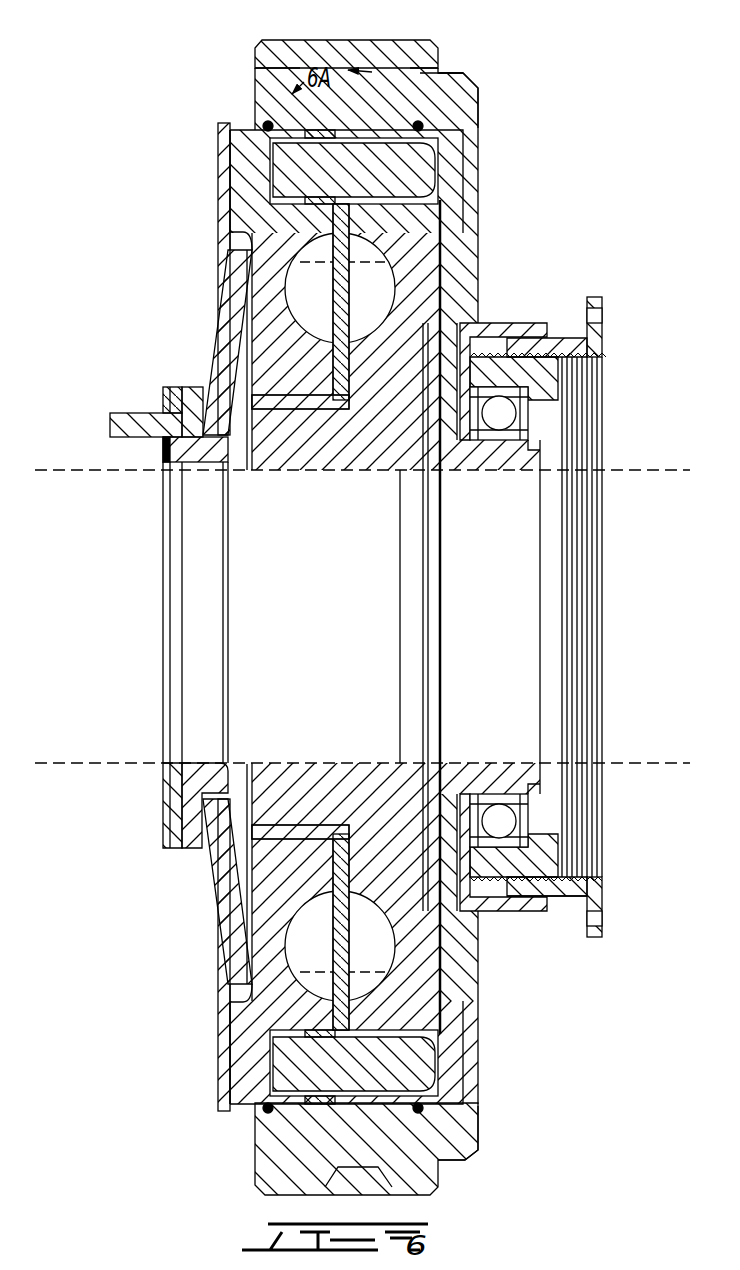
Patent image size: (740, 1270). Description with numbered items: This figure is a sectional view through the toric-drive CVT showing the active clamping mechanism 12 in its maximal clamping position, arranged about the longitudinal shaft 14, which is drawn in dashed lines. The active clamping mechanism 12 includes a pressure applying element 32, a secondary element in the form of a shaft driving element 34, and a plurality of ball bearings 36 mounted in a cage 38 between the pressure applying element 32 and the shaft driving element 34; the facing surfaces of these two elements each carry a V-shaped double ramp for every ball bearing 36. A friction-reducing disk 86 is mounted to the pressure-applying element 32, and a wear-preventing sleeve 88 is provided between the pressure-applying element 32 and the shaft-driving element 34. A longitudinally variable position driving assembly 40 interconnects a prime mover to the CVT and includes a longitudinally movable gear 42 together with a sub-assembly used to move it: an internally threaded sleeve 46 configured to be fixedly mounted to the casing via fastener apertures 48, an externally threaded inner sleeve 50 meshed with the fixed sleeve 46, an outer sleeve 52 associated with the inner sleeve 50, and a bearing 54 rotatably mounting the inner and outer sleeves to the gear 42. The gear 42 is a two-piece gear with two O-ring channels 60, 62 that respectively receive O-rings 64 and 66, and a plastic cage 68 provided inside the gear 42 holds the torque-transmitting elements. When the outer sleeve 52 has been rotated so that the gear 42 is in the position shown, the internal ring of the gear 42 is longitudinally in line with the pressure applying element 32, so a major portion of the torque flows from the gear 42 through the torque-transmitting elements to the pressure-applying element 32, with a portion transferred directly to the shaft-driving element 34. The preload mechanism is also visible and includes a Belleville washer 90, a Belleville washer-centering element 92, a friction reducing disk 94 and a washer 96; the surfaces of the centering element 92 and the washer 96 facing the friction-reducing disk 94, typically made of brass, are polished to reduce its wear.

The active clamping mechanism 12 is at (126, 104).
The longitudinal shaft 14 is at (70, 765).
The pressure applying element 32 is at (241, 138).
The shaft driving element 34 is at (415, 284).
The ball bearings 36 is at (372, 930).
The cage 38 is at (433, 1010).
The longitudinally variable position driving assembly 40 is at (496, 155).
The longitudinally movable gear 42 is at (468, 82).
The internally threaded sleeve 46 is at (567, 898).
The fastener apertures 48 is at (598, 916).
The externally threaded inner sleeve 50 is at (552, 846).
The outer sleeve 52 is at (512, 323).
The bearing 54 is at (502, 820).
The O-ring channel 60 is at (424, 124).
The O-ring channel 62 is at (268, 120).
The O-ring 64 is at (434, 85).
The O-ring 66 is at (262, 128).
The plastic cage 68 is at (340, 133).
The friction-reducing disk 86 is at (232, 168).
The wear-preventing sleeve 88 is at (305, 470).
The Belleville washer 90 is at (228, 316).
The Belleville washer-centering element 92 is at (190, 390).
The friction reducing disk 94 is at (179, 848).
The washer 96 is at (165, 842).